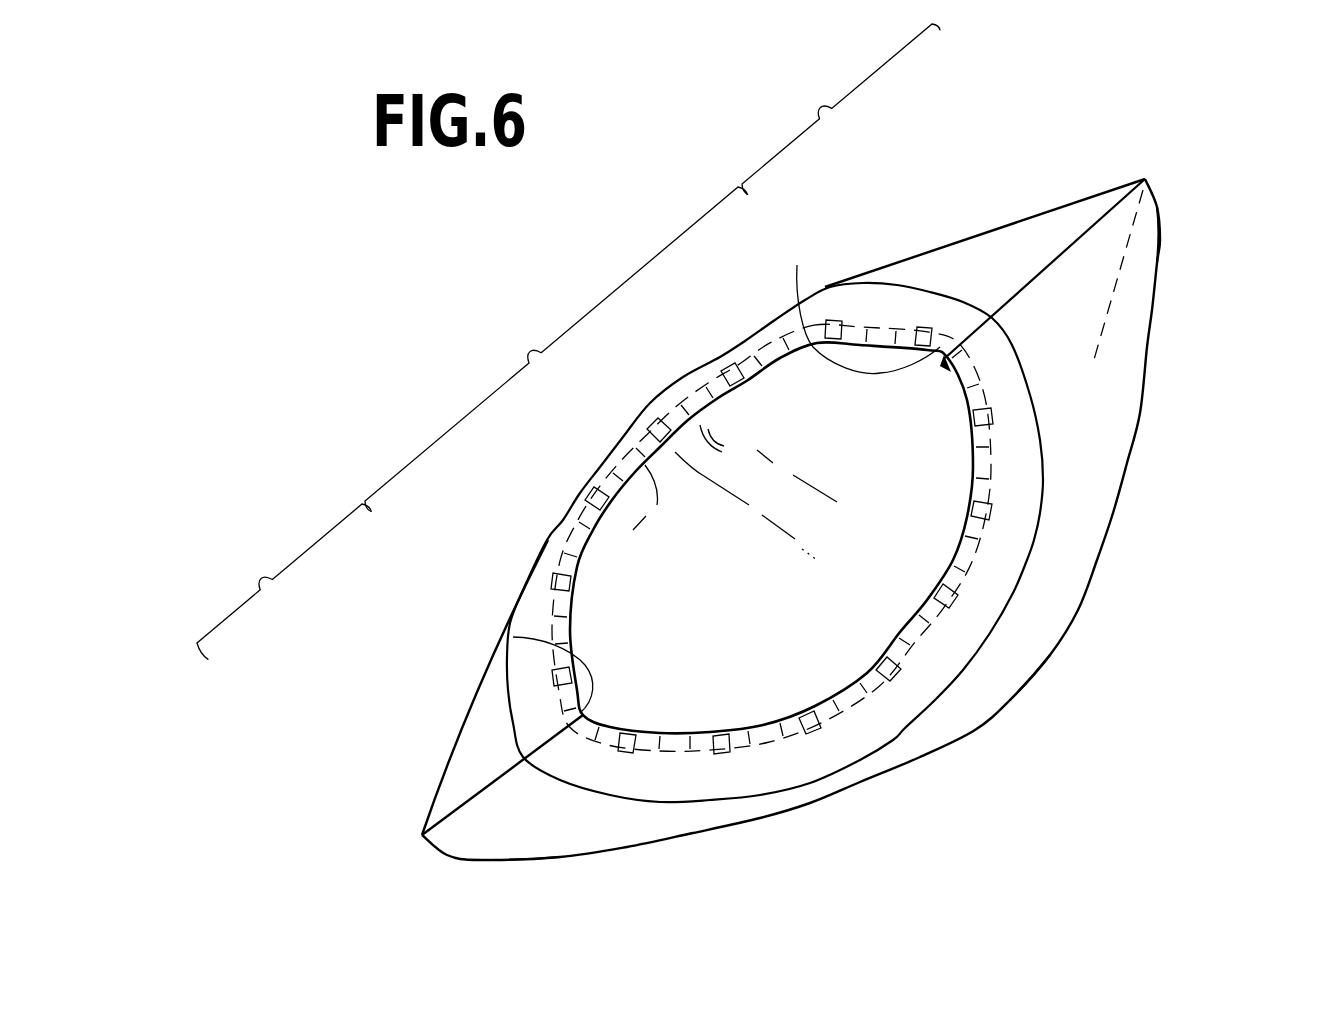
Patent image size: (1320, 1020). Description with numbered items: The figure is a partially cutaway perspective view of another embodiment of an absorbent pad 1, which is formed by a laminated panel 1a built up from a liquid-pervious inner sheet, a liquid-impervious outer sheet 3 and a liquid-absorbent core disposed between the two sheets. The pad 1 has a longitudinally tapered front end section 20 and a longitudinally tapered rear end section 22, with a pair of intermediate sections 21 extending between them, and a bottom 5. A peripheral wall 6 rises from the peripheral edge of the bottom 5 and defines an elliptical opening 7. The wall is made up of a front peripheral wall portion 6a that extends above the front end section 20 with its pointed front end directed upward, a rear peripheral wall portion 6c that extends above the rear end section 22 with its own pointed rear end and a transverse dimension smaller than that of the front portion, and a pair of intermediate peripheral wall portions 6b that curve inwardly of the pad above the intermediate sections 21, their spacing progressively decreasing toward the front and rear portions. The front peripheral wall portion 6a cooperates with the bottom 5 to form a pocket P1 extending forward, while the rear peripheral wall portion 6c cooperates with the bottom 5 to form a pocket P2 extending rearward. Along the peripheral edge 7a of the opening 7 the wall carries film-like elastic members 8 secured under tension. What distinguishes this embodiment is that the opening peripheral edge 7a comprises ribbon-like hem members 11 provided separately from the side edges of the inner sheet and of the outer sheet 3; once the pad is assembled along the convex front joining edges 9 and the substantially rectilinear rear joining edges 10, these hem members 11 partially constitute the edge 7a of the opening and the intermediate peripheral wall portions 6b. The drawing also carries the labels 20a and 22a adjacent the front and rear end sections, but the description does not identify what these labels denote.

The absorbent pad 1 is at (1040, 180).
The laminated panel 1a is at (771, 590).
The outer sheet 3 is at (710, 361).
The bottom 5 is at (800, 673).
The peripheral wall 6 is at (1063, 520).
The front peripheral wall portion 6a is at (1110, 241).
The intermediate peripheral wall portions 6b is at (977, 687).
The rear peripheral wall portion 6c is at (500, 837).
The opening 7 is at (623, 520).
The peripheral edge of the opening 7a is at (741, 348).
The film-like elastic members 8 is at (670, 420).
The joining edges 9 is at (1110, 208).
The joining edges 10 is at (460, 808).
The hem members 11 is at (557, 548).
The front end section 20 is at (841, 109).
The first edge 20a is at (1003, 236).
The intermediate sections 21 is at (556, 349).
The rear end section 22 is at (284, 582).
The third edge 22a is at (467, 721).
The pocket P1 is at (865, 303).
The pocket P2 is at (513, 637).